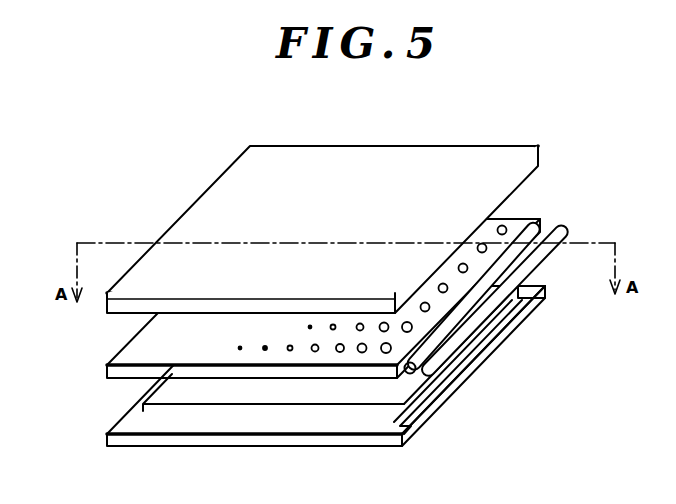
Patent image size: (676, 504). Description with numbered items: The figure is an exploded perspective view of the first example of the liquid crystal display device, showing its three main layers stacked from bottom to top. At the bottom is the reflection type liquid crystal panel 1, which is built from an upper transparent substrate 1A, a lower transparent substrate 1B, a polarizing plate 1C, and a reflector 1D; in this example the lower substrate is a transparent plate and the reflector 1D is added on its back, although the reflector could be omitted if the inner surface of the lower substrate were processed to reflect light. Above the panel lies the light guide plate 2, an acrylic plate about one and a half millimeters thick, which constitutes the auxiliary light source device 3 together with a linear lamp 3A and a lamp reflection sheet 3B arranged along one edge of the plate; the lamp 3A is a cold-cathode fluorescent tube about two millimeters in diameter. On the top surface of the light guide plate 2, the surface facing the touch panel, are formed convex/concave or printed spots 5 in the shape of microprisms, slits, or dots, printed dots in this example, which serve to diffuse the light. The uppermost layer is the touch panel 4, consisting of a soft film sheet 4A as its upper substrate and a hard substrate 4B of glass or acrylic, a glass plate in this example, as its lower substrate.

The reflection type liquid crystal panel 1 is at (352, 370).
The upper transparent substrate 1A is at (541, 288).
The lower transparent substrate 1B is at (538, 311).
The polarizing plate 1C is at (506, 350).
The reflector 1D is at (516, 338).
The light guide plate 2 is at (107, 357).
The auxiliary light source device 3 is at (335, 298).
The linear lamp 3A is at (549, 214).
The lamp reflection sheet 3B is at (574, 223).
The touch panel 4 is at (356, 190).
The soft film sheet 4A is at (541, 146).
The hard substrate 4B is at (546, 156).
The printed spots 5 is at (431, 311).